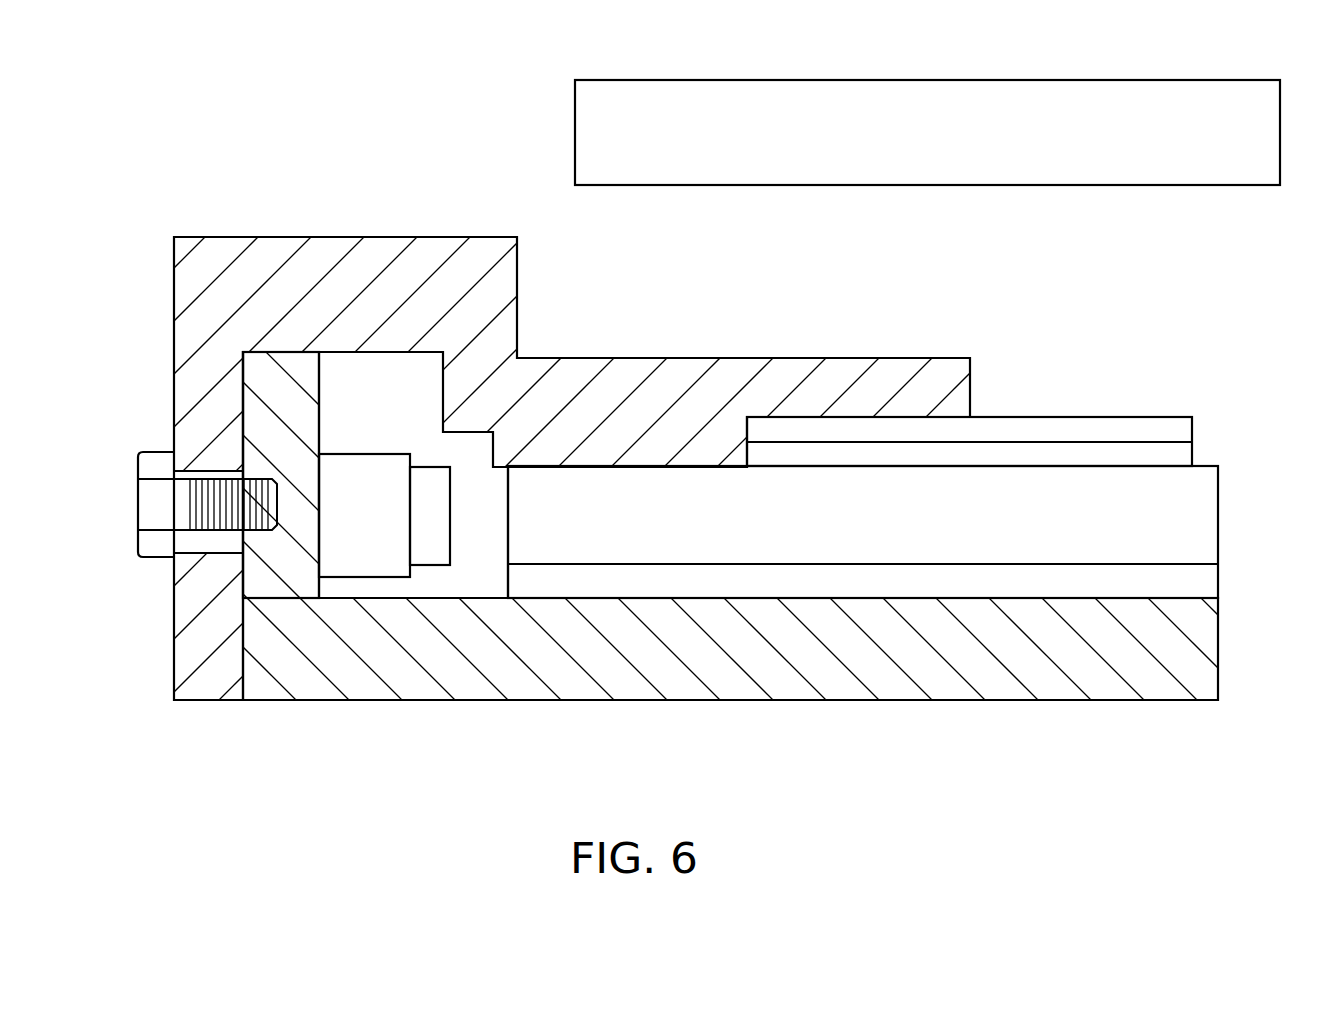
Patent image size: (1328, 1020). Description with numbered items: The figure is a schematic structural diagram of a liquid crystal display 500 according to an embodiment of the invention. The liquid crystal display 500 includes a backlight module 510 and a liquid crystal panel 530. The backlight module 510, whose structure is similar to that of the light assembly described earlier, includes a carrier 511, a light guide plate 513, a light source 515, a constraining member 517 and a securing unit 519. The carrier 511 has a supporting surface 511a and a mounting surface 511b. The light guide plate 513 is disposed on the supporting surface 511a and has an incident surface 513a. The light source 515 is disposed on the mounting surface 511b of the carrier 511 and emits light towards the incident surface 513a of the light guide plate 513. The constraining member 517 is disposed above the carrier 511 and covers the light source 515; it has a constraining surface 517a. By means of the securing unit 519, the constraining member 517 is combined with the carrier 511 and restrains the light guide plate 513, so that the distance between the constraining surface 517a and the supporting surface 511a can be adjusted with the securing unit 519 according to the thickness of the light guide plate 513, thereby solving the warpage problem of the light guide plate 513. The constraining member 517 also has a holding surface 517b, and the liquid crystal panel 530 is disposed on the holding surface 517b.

The liquid crystal display 500 is at (87, 67).
The backlight module 510 is at (123, 322).
The carrier 511 is at (1200, 670).
The supporting surface 511a is at (758, 598).
The mounting surface 511b is at (320, 537).
The light guide plate 513 is at (1200, 523).
The incident surface 513a is at (503, 527).
The light source 515 is at (371, 556).
The constraining member 517 is at (325, 255).
The constraining surface 517a is at (647, 467).
The holding surface 517b is at (860, 358).
The securing unit 519 is at (122, 452).
The liquid crystal panel 530 is at (968, 100).